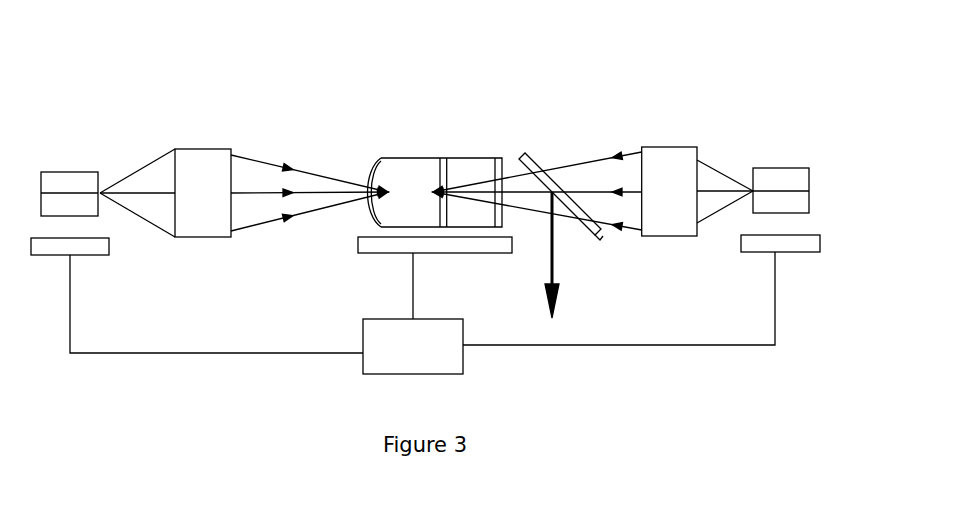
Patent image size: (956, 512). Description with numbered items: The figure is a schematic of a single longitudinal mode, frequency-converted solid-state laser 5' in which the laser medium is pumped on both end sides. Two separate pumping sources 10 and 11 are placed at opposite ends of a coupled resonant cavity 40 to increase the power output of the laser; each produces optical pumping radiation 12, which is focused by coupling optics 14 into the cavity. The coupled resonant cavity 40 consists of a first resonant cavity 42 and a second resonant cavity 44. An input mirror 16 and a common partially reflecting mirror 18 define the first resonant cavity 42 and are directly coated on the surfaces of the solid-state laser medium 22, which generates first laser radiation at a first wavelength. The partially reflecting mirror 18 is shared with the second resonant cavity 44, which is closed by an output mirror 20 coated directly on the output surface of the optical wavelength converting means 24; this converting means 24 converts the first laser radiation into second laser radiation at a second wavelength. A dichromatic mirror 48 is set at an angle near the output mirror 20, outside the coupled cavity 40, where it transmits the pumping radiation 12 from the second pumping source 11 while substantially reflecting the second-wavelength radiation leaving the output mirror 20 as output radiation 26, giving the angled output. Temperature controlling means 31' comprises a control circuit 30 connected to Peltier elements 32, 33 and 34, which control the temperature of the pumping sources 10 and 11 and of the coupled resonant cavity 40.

The laser 5' is at (807, 24).
The optical pumping source 10 is at (64, 172).
The pumping source 11 is at (787, 168).
The optical pumping radiation 12 is at (137, 173).
The coupling optics 14 is at (201, 149).
The input mirror 16 is at (368, 175).
The common partially reflecting mirror 18 is at (444, 157).
The output mirror 20 is at (507, 163).
The solid-state laser medium 22 is at (408, 167).
The optical wavelength converting means 24 is at (468, 163).
The output radiation 26 is at (553, 263).
The control circuit 30 is at (422, 313).
The temperature controlling means 31' is at (532, 371).
The Peltier element 32 is at (92, 248).
The Peltier element 33 is at (797, 245).
The Peltier element 34 is at (367, 248).
The coupled resonant cavity 40 is at (503, 62).
The first resonant cavity 42 is at (445, 98).
The second resonant cavity 44 is at (503, 98).
The dichromatic mirror 48 is at (598, 233).